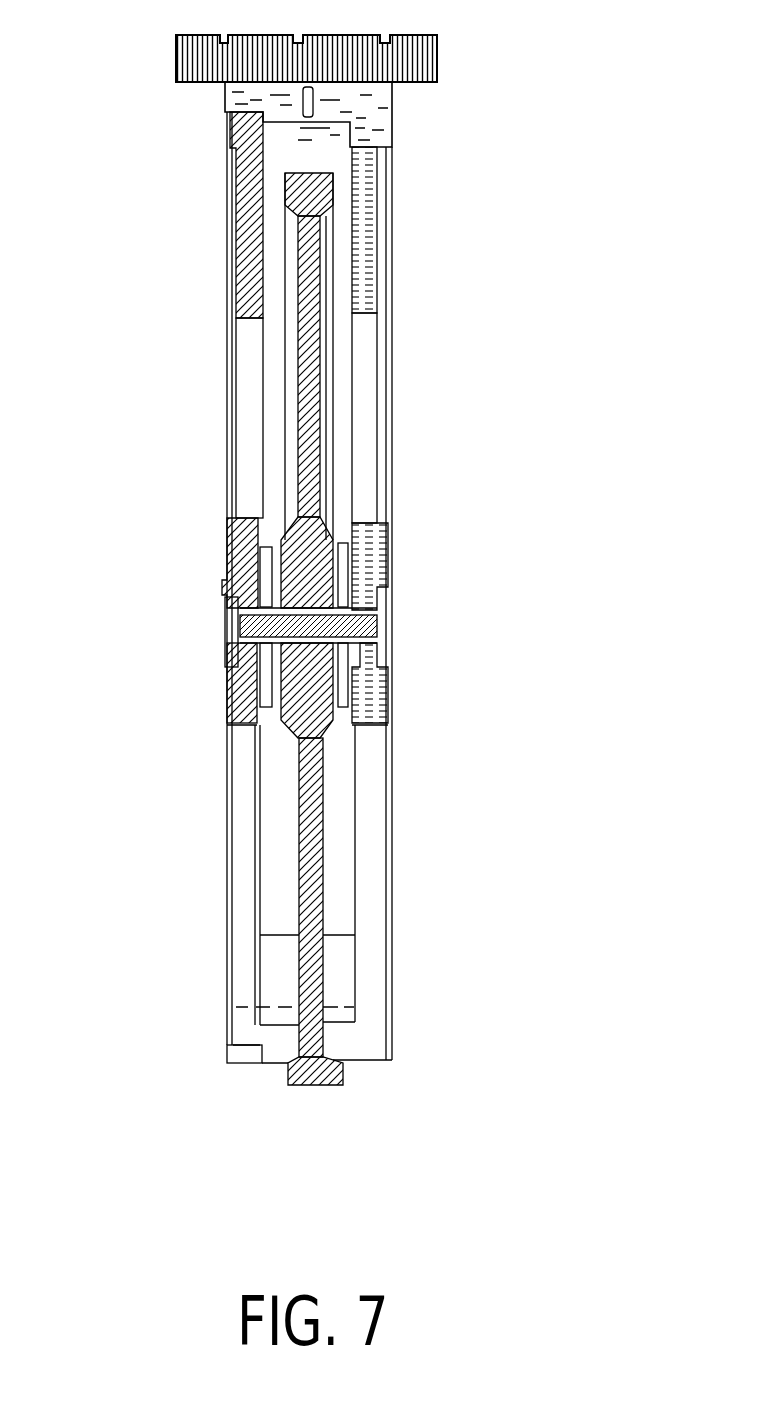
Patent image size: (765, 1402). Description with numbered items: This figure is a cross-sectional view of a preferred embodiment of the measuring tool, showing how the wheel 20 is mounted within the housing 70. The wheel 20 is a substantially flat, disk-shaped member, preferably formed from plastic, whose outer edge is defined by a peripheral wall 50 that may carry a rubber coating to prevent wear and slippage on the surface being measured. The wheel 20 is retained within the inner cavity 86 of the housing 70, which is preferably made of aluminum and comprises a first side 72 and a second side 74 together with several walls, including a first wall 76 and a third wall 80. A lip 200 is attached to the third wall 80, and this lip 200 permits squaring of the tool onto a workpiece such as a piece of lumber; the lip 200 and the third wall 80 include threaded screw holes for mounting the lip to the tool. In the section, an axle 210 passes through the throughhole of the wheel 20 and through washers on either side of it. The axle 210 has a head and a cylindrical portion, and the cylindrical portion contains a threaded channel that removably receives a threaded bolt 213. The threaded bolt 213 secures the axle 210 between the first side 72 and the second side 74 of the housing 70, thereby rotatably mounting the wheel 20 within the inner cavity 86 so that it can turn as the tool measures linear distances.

The lip 200 is at (437, 42).
The third wall 80 is at (393, 88).
The inner cavity 86 is at (282, 802).
The second side 74 is at (373, 797).
The wheel 20 is at (330, 905).
The first side 72 is at (240, 863).
The housing 70 is at (375, 980).
The axle 210 is at (380, 634).
The threaded bolt 213 is at (230, 653).
The first wall 76 is at (250, 1063).
The peripheral wall 50 is at (327, 1085).